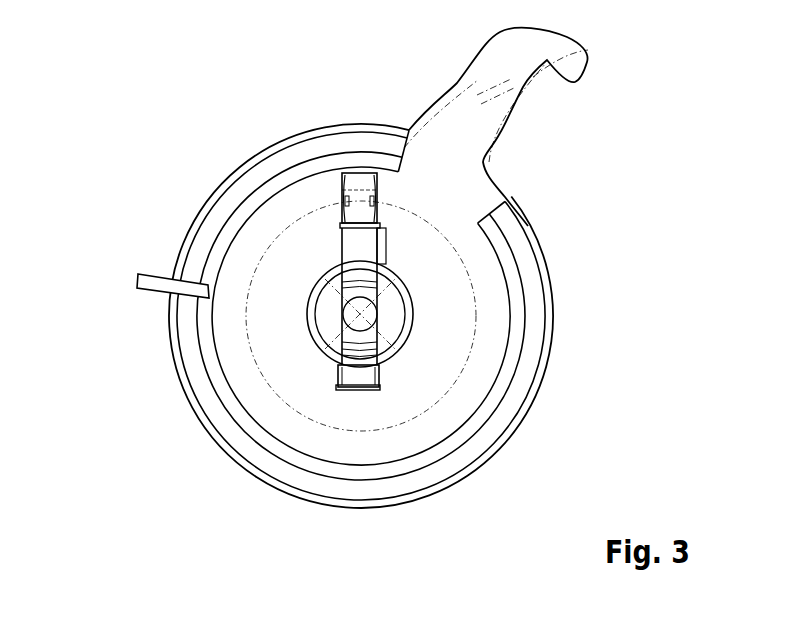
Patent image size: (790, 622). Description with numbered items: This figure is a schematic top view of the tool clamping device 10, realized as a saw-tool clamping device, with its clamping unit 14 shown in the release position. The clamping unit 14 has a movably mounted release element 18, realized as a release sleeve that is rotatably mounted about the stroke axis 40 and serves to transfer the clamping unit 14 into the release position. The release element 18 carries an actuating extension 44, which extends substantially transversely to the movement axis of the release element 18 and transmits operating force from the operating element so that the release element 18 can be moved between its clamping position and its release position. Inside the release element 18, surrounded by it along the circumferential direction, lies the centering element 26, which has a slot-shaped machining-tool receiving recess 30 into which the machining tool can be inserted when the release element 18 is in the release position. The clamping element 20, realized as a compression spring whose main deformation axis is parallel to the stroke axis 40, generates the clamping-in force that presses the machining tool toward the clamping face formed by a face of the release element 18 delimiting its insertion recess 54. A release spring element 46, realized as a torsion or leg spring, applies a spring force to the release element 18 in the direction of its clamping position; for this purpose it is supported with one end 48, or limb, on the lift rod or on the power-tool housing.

The tool clamping device 10 is at (132, 108).
The clamping unit 14 is at (576, 243).
The release element 18 is at (516, 388).
The clamping element 20 is at (353, 342).
The centering element 26 is at (390, 338).
The machining-tool receiving recess 30 is at (347, 284).
The stroke axis 40 is at (372, 321).
The actuating extension 44 is at (496, 57).
The release spring element 46 is at (201, 333).
The end of release spring element 48 is at (160, 285).
The insertion recess 54 is at (388, 383).